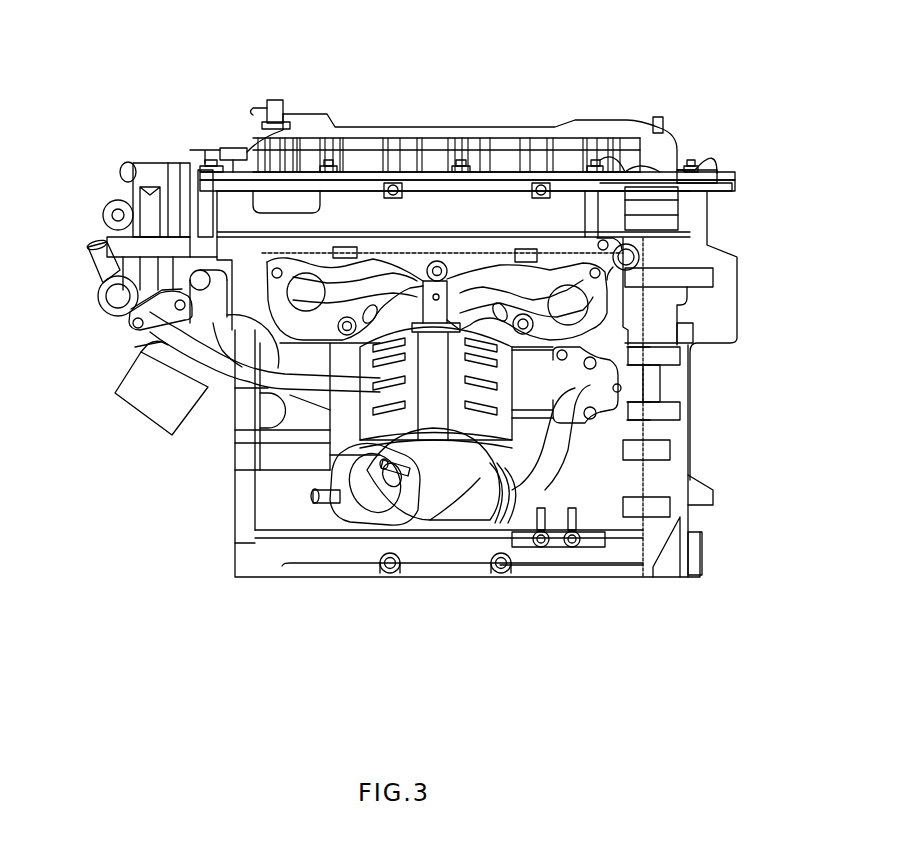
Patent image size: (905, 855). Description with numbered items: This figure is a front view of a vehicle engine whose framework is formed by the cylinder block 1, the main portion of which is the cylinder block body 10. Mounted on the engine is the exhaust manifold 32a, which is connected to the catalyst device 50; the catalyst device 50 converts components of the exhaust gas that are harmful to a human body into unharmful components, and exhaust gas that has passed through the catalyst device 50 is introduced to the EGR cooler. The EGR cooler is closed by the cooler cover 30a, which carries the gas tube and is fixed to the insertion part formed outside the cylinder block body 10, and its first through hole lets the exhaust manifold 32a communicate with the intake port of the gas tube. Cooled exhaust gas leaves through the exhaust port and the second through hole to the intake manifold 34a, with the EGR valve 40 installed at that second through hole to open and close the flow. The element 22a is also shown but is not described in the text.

The cylinder block 1 is at (269, 90).
The cylinder block body 10 is at (372, 212).
The EGR valve 40 is at (152, 177).
The cooler cover 30a is at (617, 388).
The exhaust manifold 32a is at (550, 448).
The first exhaust pipe 22a is at (323, 403).
The intake manifold 34a is at (203, 347).
The catalyst device 50 is at (455, 477).